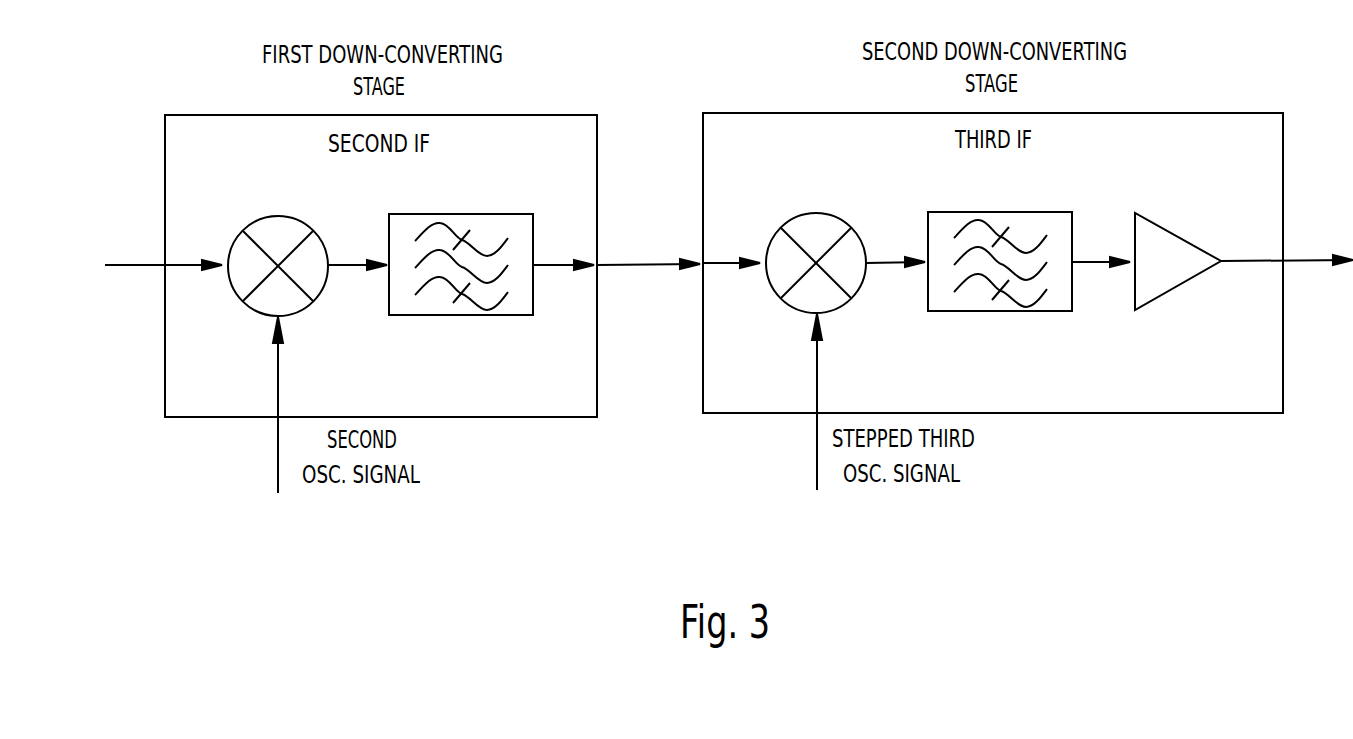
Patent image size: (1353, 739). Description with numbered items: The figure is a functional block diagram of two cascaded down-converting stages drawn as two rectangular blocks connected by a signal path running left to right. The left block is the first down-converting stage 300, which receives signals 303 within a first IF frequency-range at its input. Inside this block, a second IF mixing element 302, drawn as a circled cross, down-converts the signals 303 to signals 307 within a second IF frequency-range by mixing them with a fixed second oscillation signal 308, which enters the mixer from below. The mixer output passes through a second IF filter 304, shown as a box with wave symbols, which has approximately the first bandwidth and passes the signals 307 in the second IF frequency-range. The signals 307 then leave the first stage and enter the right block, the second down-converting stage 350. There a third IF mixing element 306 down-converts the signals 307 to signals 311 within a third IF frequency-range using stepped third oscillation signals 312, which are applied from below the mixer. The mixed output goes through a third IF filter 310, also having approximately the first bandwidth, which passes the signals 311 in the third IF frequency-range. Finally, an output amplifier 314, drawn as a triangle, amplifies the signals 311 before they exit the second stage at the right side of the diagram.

The first down-converting stage 300 is at (540, 114).
The second IF mixing element 302 is at (300, 219).
The signals within a first IF frequency-range 303 is at (137, 265).
The second IF filter 304 is at (481, 212).
The third IF mixing element 306 is at (839, 217).
The signals within a second IF frequency-range 307 is at (635, 262).
The fixed second oscillation signal 308 is at (278, 465).
The third IF filter 310 is at (1019, 210).
The signals within a third IF frequency-range 311 is at (1310, 260).
The stepped third oscillation signals 312 is at (817, 461).
The output amplifier 314 is at (1178, 235).
The second down-converting stage 350 is at (1225, 112).